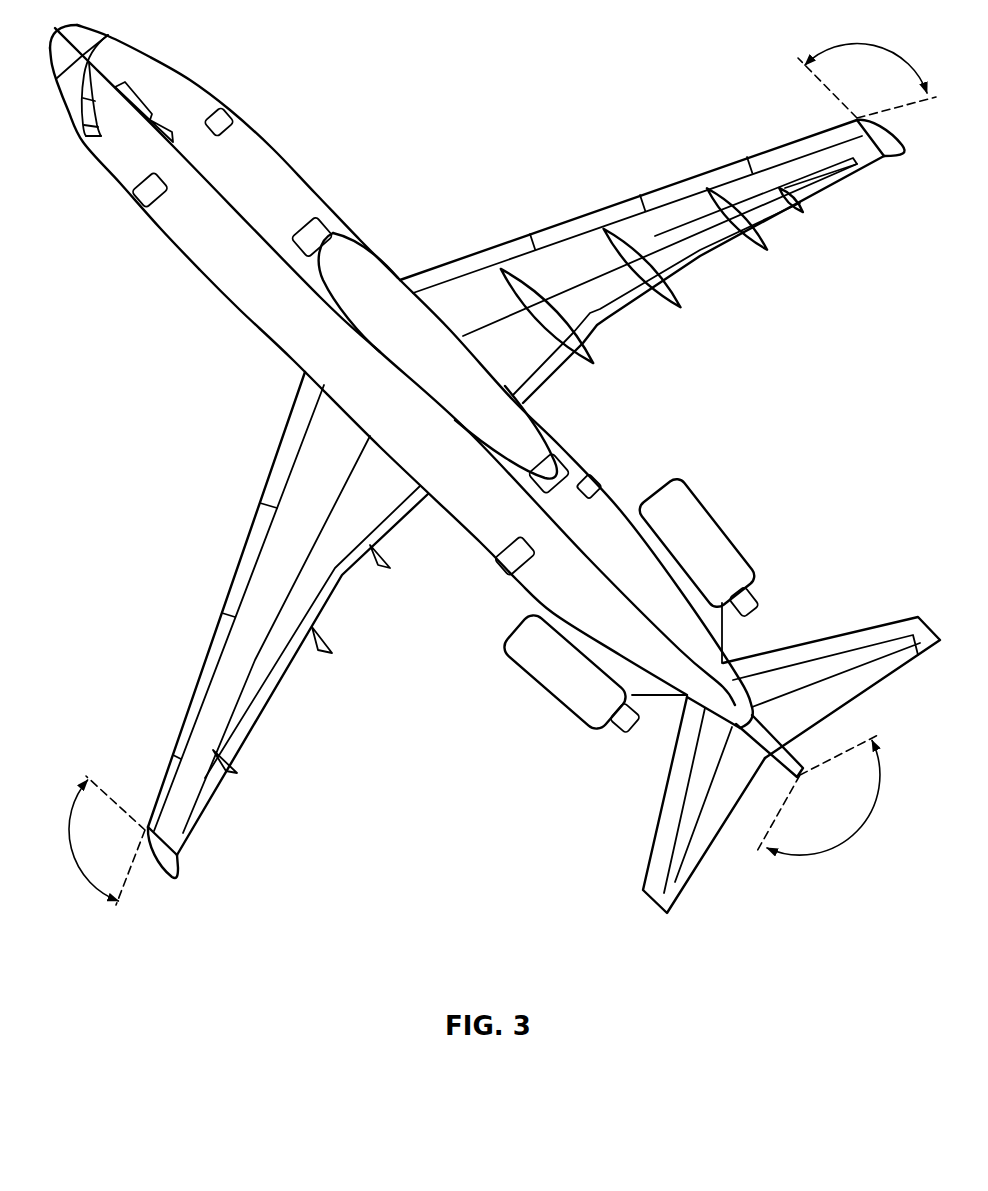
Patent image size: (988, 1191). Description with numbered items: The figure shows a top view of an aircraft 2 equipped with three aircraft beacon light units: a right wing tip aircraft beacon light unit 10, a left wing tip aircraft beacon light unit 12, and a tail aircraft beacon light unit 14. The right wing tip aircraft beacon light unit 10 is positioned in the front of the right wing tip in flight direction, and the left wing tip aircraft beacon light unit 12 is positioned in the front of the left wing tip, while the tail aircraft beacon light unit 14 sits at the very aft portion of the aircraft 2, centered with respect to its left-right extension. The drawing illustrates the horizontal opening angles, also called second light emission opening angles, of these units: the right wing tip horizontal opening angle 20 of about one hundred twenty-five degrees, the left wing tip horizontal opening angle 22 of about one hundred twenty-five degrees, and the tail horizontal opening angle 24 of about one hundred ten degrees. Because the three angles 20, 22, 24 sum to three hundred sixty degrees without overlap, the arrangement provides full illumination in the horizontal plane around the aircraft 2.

The aircraft 2 is at (263, 138).
The right wing tip aircraft beacon light unit 10 is at (853, 120).
The left wing tip aircraft beacon light unit 12 is at (146, 825).
The tail aircraft beacon light unit 14 is at (802, 773).
The right wing tip horizontal opening angle 20 is at (873, 47).
The left wing tip horizontal opening angle 22 is at (72, 847).
The tail horizontal opening angle 24 is at (870, 818).